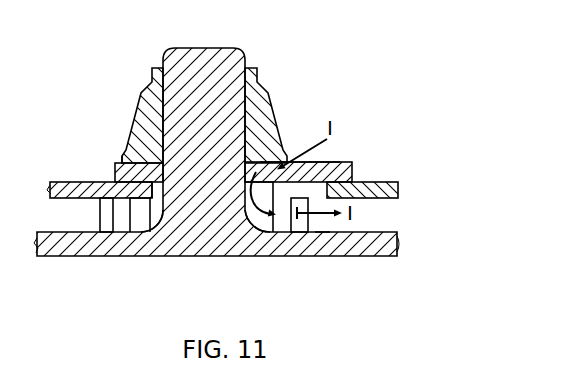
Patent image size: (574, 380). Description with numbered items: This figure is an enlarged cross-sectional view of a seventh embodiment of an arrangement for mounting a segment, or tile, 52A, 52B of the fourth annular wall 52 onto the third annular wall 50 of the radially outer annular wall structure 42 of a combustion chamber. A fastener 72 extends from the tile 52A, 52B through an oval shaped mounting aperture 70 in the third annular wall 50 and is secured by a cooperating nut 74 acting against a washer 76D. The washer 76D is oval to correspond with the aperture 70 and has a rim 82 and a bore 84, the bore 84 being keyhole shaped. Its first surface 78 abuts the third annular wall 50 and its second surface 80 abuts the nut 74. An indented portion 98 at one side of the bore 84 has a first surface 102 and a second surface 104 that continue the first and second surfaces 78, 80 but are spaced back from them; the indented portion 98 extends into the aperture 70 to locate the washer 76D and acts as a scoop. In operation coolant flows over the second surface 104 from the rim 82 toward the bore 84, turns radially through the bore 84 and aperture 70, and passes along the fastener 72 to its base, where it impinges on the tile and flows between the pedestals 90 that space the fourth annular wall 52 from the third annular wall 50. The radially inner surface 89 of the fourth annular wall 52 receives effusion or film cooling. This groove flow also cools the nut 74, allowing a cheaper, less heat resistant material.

The fastener 72 is at (214, 62).
The nut 74 is at (262, 110).
The washer 76D is at (121, 160).
The rim 82 is at (112, 170).
The second surface of the washer 80 is at (345, 162).
The indented portion 98 is at (300, 163).
The second surface of the indented portion 104 is at (285, 170).
The third annular wall 50 is at (402, 186).
The radially outer annular wall structure 42 is at (272, 162).
The fourth annular wall 52 is at (238, 162).
The segment or tile 52A is at (238, 162).
The segment or tile 52B is at (238, 162).
The mounting aperture 70 is at (325, 240).
The first surface of the indented portion 102 is at (318, 190).
The pedestals 90 is at (106, 215).
The radially inner surface of the fourth annular wall 89 is at (232, 246).
The bore 84 is at (170, 185).
The first surface of the washer 78 is at (145, 205).